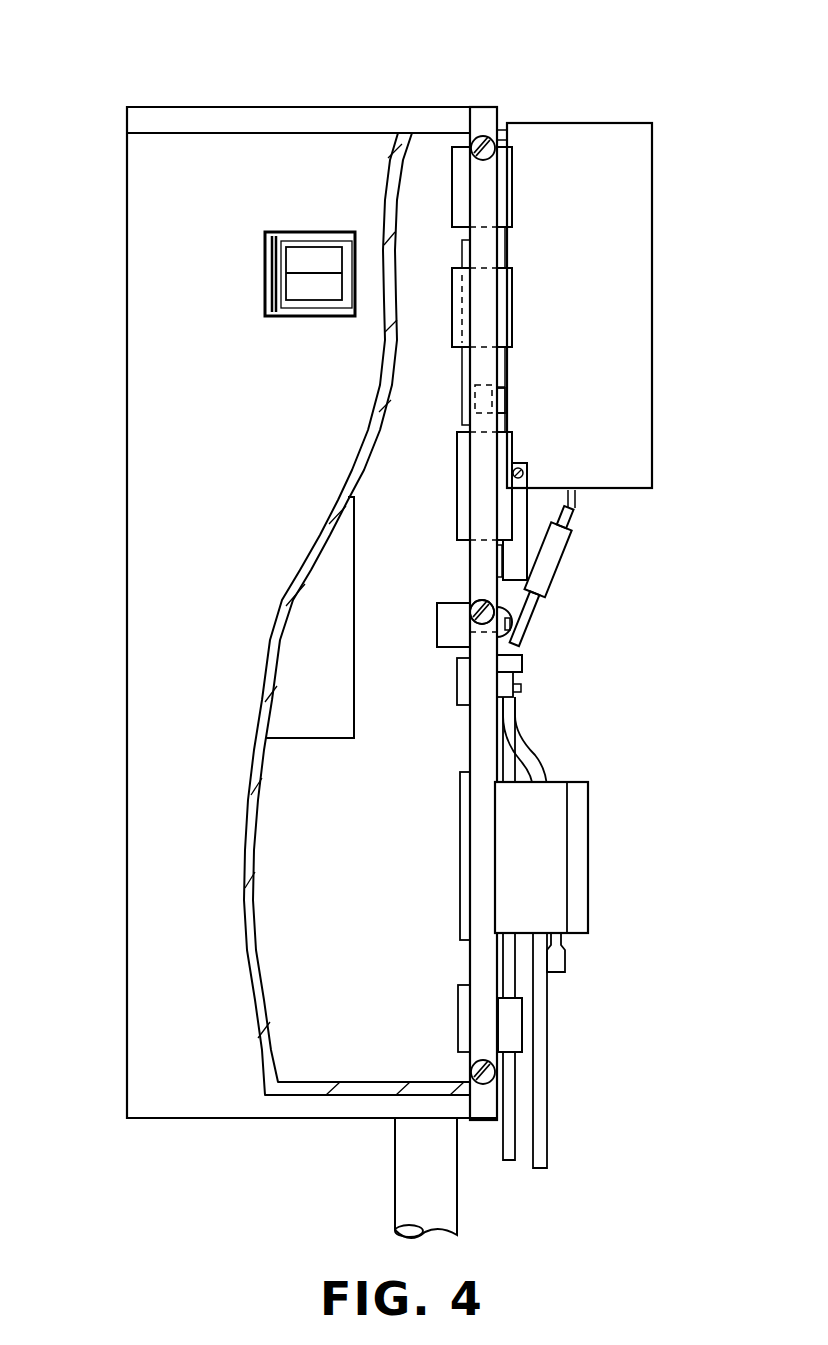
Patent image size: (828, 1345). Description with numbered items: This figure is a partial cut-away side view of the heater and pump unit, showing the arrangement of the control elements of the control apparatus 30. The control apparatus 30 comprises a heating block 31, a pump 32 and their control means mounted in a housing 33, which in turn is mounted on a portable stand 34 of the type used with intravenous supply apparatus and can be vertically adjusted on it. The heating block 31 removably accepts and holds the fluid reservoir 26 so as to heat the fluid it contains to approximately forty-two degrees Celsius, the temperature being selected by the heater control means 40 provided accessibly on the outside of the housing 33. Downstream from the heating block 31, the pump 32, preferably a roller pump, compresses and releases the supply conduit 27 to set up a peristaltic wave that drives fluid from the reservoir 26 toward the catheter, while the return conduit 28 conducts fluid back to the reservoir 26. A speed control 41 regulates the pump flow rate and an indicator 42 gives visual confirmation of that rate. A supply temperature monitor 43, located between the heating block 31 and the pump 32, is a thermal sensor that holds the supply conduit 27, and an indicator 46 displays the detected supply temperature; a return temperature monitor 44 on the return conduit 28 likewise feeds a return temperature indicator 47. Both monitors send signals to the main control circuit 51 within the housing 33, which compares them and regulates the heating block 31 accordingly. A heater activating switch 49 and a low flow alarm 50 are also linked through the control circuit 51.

The fluid reservoir 26 is at (610, 281).
The supply conduit 27 is at (518, 732).
The return conduit 28 is at (503, 1162).
The control apparatus 30 is at (498, 78).
The heating block 31 is at (605, 346).
The pump 32 is at (577, 880).
The housing 33 is at (160, 801).
The portable stand 34 is at (395, 1213).
The heater control means 40 is at (272, 262).
The speed control 41 is at (500, 612).
The indicator 42 is at (512, 505).
The supply temperature monitor 43 is at (522, 657).
The return temperature monitor 44 is at (522, 1040).
The indicator 46 is at (515, 196).
The return temperature indicator 47 is at (512, 312).
The heater activating switch 49 is at (505, 398).
The low flow alarm 50 is at (508, 563).
The main control circuit 51 is at (318, 742).